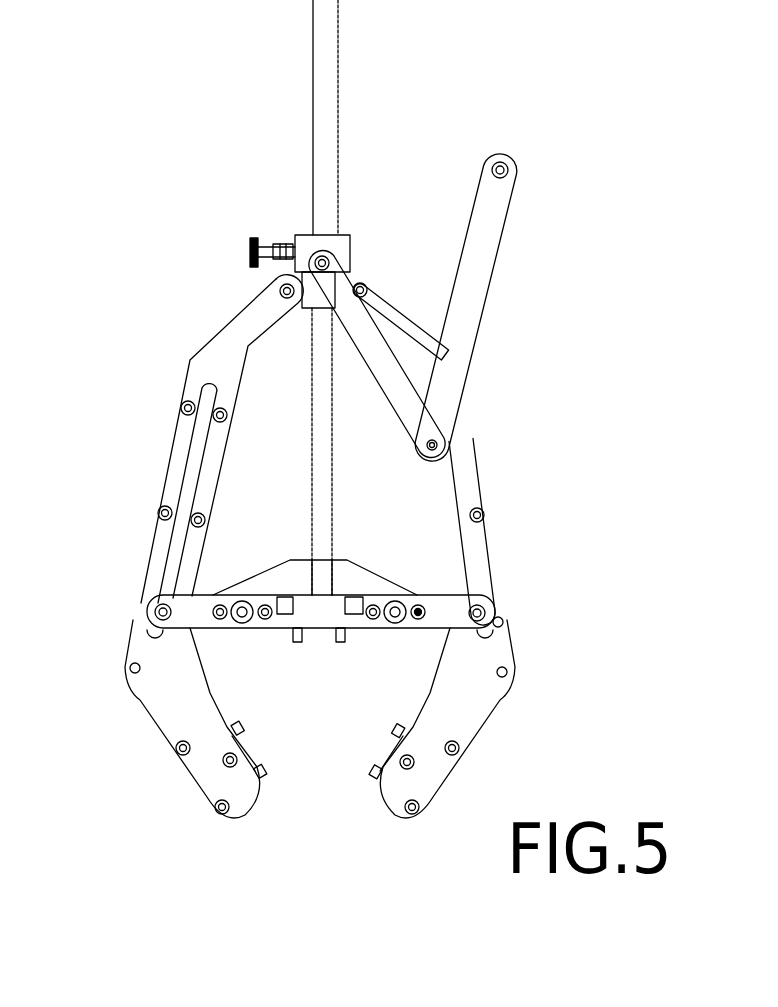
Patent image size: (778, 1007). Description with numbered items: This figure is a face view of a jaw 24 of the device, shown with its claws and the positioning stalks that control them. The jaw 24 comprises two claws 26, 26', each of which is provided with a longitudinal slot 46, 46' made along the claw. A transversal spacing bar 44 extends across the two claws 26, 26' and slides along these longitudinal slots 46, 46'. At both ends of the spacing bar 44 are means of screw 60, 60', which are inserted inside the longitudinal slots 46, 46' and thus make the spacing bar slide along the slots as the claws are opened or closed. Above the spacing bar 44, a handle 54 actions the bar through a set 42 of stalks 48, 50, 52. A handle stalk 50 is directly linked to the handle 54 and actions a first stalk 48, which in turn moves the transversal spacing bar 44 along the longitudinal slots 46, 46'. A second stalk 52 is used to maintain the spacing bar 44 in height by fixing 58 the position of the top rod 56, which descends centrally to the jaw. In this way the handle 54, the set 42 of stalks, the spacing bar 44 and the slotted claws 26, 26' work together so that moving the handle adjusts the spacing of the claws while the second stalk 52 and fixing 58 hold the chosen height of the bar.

The jaw 24 is at (158, 235).
The claw 26 is at (158, 719).
The claw 26' is at (478, 719).
The set of stalks 42 is at (500, 367).
The transversal spacing bar 44 is at (267, 628).
The longitudinal slot 46 is at (189, 439).
The longitudinal slot 46' is at (448, 366).
The first stalk 48 is at (455, 495).
The handle stalk 50 is at (475, 283).
The second stalk 52 is at (392, 383).
The handle 54 is at (510, 163).
The top rod 56 is at (328, 95).
The fixing 58 is at (353, 235).
The means of screw 60 is at (100, 592).
The means of screw 60' is at (519, 583).